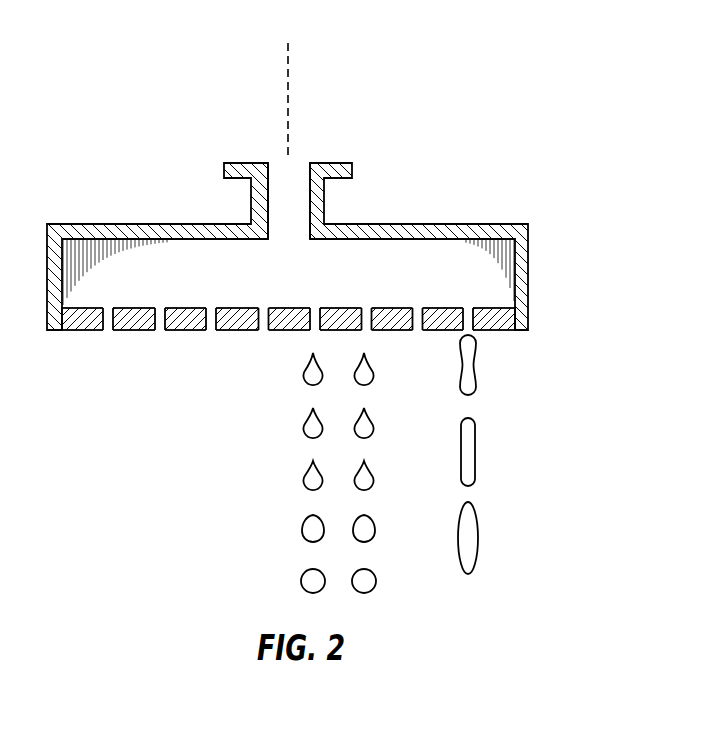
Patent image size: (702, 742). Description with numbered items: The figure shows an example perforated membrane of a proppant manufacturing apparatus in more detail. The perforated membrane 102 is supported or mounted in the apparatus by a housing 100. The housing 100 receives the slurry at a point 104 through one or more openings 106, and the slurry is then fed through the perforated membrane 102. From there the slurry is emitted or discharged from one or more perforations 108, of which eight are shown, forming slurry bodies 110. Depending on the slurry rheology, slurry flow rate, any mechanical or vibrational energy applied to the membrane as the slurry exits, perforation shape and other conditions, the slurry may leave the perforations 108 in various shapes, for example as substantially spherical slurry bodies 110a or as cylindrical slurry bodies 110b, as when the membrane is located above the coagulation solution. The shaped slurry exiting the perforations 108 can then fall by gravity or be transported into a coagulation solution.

The housing 100 is at (528, 278).
The perforated membrane 102 is at (133, 316).
The point 104 is at (290, 98).
The openings 106 is at (293, 215).
The perforations 108 is at (209, 331).
The slurry bodies 110 is at (302, 530).
The substantially spherical slurry bodies 110a is at (302, 581).
The cylindrical slurry bodies 110b is at (478, 538).